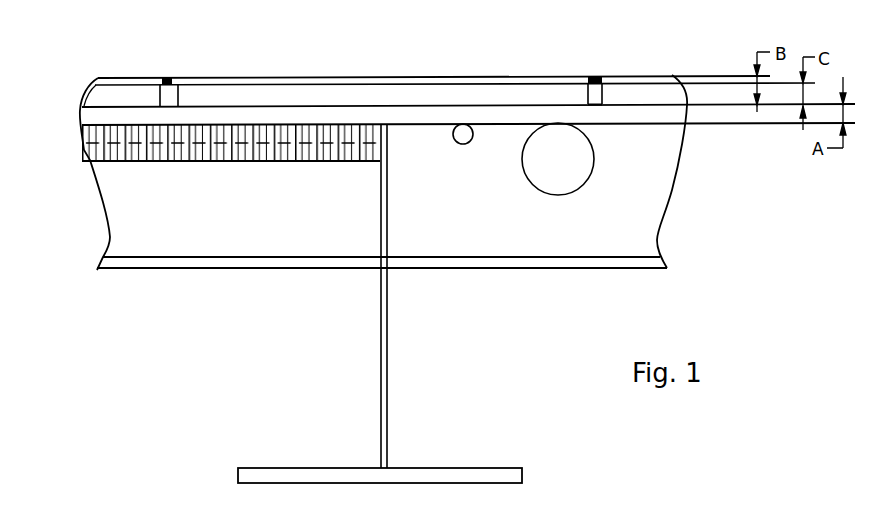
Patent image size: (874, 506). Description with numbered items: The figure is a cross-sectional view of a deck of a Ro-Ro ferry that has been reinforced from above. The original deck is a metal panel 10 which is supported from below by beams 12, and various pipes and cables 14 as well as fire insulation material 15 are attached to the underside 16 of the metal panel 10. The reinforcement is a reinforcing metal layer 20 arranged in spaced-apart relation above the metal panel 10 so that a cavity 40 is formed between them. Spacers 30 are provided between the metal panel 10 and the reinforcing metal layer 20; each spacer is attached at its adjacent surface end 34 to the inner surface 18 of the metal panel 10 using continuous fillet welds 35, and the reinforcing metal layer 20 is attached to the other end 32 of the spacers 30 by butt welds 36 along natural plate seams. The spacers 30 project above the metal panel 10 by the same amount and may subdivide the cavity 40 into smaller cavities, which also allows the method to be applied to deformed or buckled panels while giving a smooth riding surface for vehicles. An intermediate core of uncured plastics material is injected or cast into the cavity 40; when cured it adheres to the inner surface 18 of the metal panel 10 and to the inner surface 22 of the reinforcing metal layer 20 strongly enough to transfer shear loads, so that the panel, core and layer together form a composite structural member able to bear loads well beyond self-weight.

The metal panel 10 is at (113, 117).
The beams 12 is at (387, 378).
The pipes and cables 14 is at (558, 195).
The fire insulation material 15 is at (213, 162).
The underside 16 is at (705, 125).
The inner surface 18 is at (382, 105).
The reinforcing metal layer 20 is at (228, 82).
The inner surface 22 is at (278, 85).
The spacers 30 is at (593, 92).
The other end 32 is at (163, 80).
The adjacent surface end 34 is at (600, 107).
The continuous fillet welds 35 is at (611, 99).
The butt welds 36 is at (592, 80).
The cavity 40 is at (113, 100).